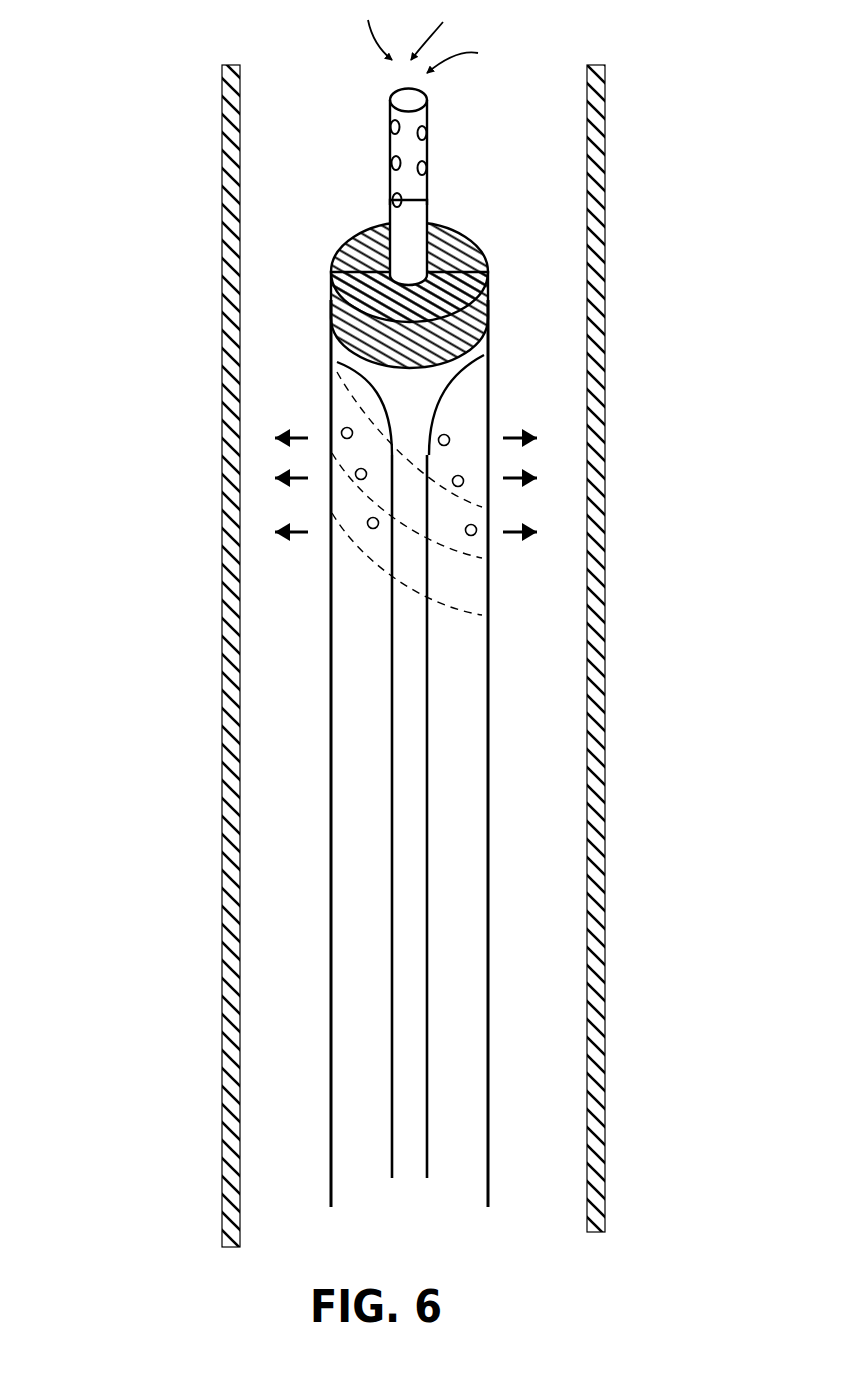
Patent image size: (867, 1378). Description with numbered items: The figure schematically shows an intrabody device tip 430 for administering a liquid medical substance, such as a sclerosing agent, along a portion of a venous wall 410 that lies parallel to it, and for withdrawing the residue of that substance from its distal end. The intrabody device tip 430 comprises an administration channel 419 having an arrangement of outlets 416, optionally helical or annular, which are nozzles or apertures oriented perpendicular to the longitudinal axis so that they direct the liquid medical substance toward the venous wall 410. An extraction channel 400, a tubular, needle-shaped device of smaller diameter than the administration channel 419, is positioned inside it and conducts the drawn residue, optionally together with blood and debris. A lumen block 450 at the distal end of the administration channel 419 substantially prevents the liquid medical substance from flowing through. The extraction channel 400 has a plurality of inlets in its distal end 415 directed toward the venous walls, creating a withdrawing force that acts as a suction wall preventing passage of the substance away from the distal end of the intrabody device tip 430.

The extraction channel 400 is at (428, 224).
The venous wall 410 is at (605, 287).
The distal end of the extraction channel 415 is at (430, 173).
The arrangement of outlets 416 is at (446, 434).
The administration channel 419 is at (322, 775).
The intrabody device tip 430 is at (491, 673).
The lumen block 450 is at (330, 327).